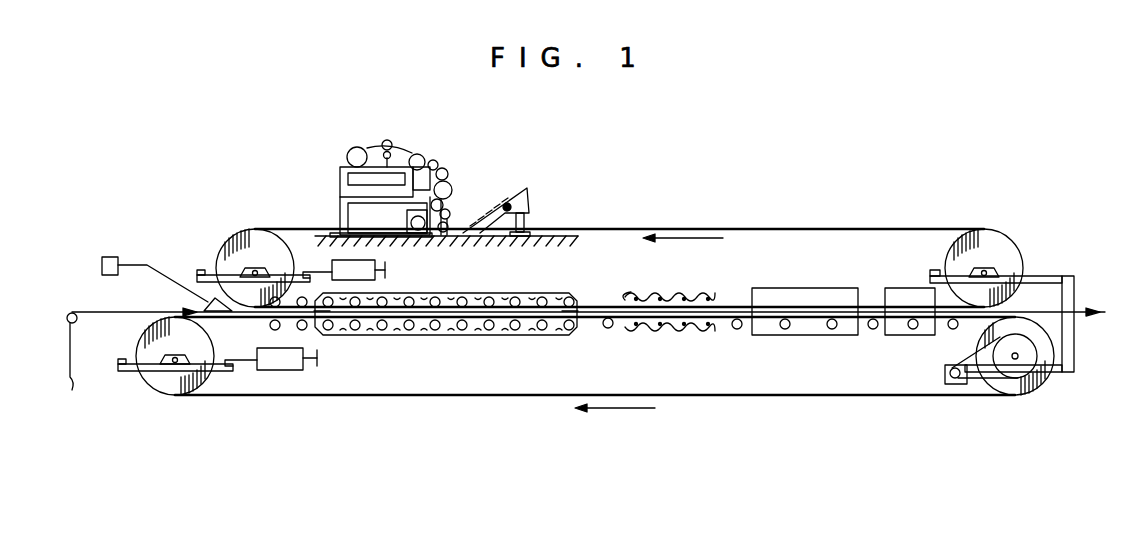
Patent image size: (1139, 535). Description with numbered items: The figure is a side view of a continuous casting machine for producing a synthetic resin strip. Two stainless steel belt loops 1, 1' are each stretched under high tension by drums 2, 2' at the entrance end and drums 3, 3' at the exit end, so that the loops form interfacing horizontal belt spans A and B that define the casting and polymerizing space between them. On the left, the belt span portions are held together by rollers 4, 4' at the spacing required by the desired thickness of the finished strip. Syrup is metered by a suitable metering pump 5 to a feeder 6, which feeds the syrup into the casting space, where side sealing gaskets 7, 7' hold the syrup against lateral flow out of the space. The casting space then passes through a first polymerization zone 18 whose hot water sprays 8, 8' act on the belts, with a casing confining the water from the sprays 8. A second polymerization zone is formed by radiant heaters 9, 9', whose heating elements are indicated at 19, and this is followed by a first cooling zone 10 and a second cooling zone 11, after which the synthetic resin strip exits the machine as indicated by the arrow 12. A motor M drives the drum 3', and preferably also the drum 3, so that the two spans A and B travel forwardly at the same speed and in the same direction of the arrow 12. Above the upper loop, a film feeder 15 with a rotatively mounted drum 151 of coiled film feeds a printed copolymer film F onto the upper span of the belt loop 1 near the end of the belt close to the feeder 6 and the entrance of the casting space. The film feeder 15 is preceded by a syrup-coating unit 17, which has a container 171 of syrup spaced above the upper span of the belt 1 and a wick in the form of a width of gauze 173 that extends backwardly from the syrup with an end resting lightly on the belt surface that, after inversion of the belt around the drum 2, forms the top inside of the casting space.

The stainless steel belt loop 1 is at (619, 247).
The stainless steel belt loop 1' is at (595, 381).
The drum 2 is at (291, 250).
The drum 2' is at (217, 381).
The drum 3 is at (1002, 284).
The drum 3' is at (1015, 381).
The rollers 4 is at (446, 296).
The rollers 4' is at (610, 353).
The metering pump 5 is at (110, 257).
The feeder 6 is at (218, 312).
The side sealing gasket 7 is at (76, 368).
The side sealing gasket 7' is at (71, 356).
The hot water sprays 8 is at (422, 282).
The hot water sprays 8' is at (422, 354).
The radiant heater 9 is at (670, 278).
The radiant heater 9' is at (671, 356).
The first cooling zone 10 is at (790, 290).
The second cooling zone 11 is at (905, 292).
The arrow 12 is at (1082, 310).
The film feeder 15 is at (381, 136).
The drum of coiled film 151 is at (348, 152).
The syrup-coating unit 17 is at (533, 179).
The container 171 is at (530, 200).
The gauze 173 is at (462, 230).
The first polymerization zone 18 is at (475, 336).
The heating elements 19 is at (632, 294).
The belt span A is at (603, 300).
The belt span B is at (585, 332).
The film F is at (400, 150).
The motor M is at (947, 386).